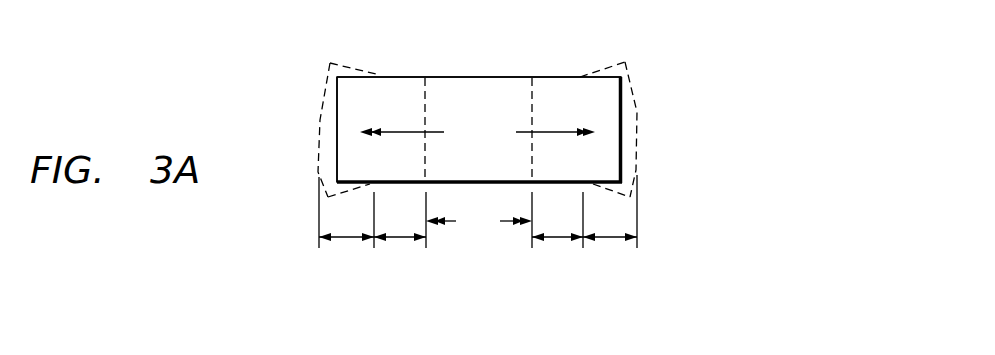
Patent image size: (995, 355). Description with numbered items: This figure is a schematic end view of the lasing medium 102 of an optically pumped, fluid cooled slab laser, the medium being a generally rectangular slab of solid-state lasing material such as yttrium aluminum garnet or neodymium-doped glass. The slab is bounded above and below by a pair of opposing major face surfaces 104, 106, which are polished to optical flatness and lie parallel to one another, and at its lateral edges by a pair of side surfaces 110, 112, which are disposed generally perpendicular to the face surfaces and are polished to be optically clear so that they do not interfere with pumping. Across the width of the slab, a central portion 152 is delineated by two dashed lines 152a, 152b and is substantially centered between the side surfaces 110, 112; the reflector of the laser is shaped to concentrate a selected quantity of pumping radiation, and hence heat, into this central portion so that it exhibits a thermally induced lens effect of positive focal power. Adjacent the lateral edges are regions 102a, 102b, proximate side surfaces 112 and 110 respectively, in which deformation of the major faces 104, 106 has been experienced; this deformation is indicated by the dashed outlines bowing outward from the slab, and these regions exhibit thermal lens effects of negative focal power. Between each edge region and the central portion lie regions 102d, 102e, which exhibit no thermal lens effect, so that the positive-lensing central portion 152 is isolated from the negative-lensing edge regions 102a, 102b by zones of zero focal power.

The lasing medium slab 102 is at (390, 77).
The region 102a is at (347, 243).
The region 102b is at (610, 243).
The region 102d is at (397, 243).
The region 102e is at (552, 243).
The major face surface 104 is at (552, 76).
The major face surface 106 is at (547, 184).
The lateral side surface 110 is at (622, 119).
The lateral side surface 112 is at (337, 102).
The central portion 152 is at (479, 221).
The dashed line 152a is at (428, 88).
The dashed line 152b is at (530, 106).